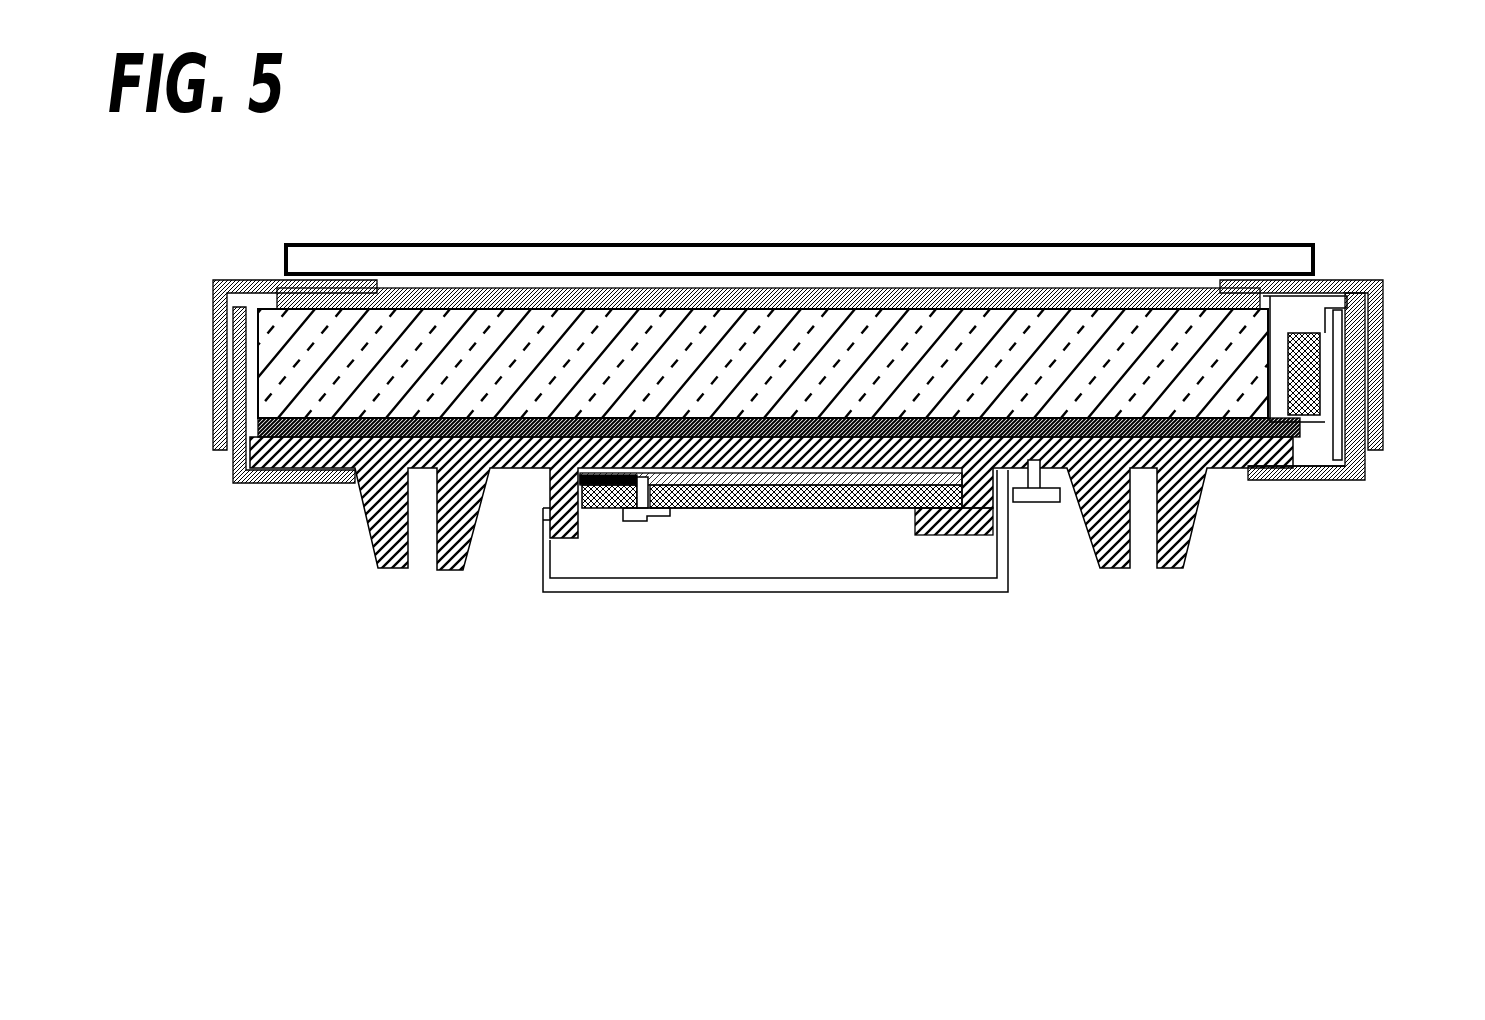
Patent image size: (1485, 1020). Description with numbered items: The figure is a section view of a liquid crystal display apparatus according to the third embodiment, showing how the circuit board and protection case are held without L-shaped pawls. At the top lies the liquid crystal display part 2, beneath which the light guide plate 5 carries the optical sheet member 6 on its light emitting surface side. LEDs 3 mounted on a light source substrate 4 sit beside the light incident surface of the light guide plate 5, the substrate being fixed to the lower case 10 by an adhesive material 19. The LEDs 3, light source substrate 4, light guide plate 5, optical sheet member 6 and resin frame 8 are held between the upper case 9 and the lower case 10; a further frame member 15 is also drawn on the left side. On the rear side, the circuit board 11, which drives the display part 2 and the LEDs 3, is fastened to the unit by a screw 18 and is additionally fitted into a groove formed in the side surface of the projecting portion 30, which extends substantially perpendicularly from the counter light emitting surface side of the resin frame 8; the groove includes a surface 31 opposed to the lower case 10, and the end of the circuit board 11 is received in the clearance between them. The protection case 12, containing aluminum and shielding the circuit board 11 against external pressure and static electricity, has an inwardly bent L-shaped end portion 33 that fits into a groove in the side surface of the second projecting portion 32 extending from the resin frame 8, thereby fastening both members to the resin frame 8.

The liquid crystal display part 2 is at (1156, 243).
The LEDs 3 is at (1305, 332).
The light source substrate 4 is at (1335, 481).
The light guide plate 5 is at (708, 355).
The optical sheet member 6 is at (923, 310).
The resin frame 8 is at (1232, 478).
The upper case 9 is at (1383, 342).
The lower case 10 is at (1357, 483).
The circuit board 11 is at (785, 510).
The protection case 12 is at (912, 593).
The frame 15 is at (366, 548).
The screw 18 is at (643, 521).
The adhesive material 19 is at (1357, 282).
The projecting portion 30 is at (953, 536).
The surface 31 is at (900, 510).
The projecting portion 32 is at (572, 540).
The end portion 33 is at (542, 516).